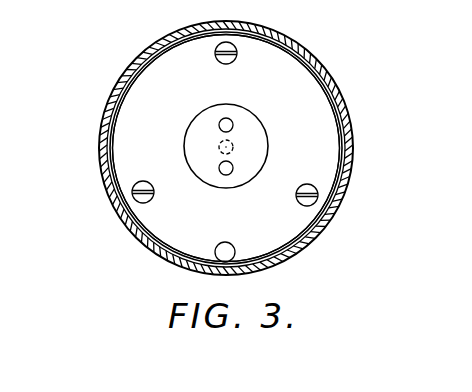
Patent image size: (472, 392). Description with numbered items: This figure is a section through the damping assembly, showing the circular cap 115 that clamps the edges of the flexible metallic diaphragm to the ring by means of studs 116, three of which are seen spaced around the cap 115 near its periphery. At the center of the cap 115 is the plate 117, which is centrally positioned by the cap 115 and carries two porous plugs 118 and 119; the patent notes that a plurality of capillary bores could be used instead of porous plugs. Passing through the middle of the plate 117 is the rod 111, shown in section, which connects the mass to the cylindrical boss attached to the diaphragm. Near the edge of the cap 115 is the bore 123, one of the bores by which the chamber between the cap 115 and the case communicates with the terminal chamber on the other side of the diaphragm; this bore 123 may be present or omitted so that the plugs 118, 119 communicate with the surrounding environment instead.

The rod 111 is at (233, 146).
The cap 115 is at (140, 88).
The studs 116 is at (225, 43).
The plate 117 is at (190, 140).
The porous plug 118 is at (227, 120).
The porous plug 119 is at (331, 59).
The bore 123 is at (217, 252).